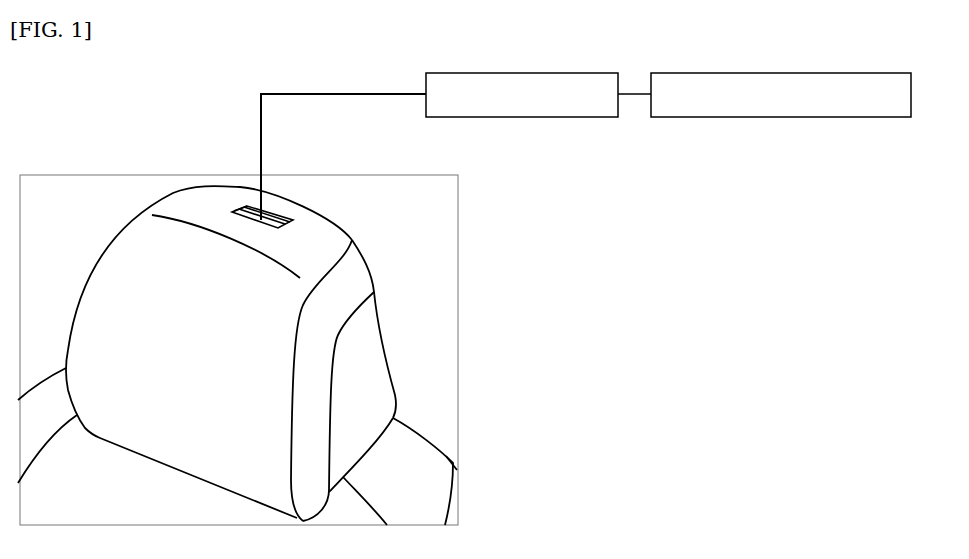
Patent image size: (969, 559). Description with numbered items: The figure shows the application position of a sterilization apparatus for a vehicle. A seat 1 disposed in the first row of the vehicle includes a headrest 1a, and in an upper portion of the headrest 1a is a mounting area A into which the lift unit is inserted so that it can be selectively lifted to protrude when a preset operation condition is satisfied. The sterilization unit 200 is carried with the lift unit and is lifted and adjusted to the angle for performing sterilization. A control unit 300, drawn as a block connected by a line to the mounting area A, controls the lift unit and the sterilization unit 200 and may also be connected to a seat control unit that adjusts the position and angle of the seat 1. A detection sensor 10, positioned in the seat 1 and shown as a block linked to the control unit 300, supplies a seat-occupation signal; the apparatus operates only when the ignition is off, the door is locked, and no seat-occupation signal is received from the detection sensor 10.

The seat 1 is at (437, 425).
The headrest 1a is at (372, 355).
The sterilization unit 200 is at (272, 212).
The mounting area A is at (240, 212).
The control unit 300 is at (492, 117).
The detection sensor 10 is at (750, 117).